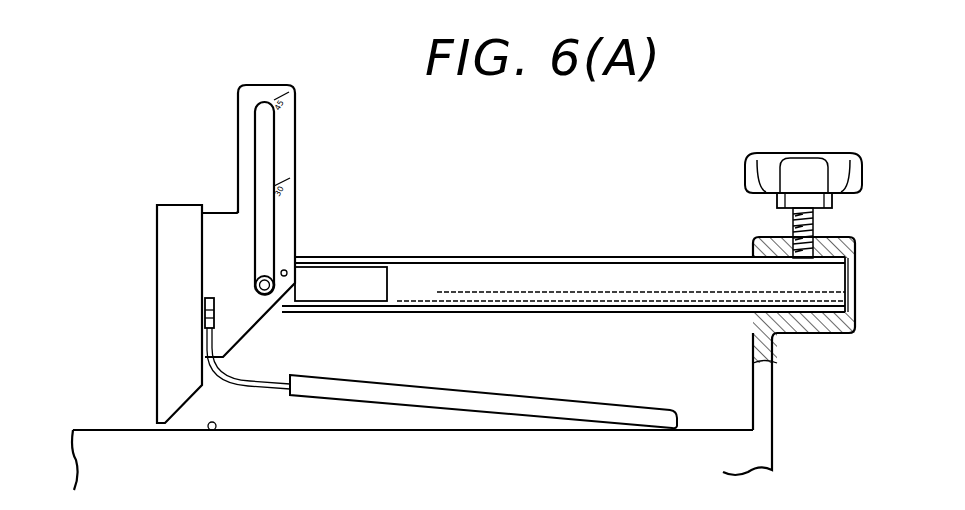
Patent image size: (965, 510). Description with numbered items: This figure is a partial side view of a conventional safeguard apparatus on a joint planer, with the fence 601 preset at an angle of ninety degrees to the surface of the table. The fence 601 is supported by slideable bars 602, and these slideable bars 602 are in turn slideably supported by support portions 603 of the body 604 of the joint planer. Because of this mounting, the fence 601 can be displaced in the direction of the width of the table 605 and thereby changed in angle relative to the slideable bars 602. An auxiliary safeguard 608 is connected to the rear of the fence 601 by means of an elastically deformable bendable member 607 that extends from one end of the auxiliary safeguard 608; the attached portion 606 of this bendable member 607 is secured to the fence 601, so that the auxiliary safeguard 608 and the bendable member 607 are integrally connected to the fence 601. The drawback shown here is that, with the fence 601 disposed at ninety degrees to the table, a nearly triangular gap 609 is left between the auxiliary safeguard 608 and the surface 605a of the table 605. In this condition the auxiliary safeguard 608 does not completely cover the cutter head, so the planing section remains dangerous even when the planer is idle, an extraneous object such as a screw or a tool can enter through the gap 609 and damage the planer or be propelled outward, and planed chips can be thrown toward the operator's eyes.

The fence 601 is at (170, 240).
The slideable bars 602 is at (562, 257).
The support portions 603 is at (855, 247).
The body 604 is at (777, 442).
The table 605 is at (120, 430).
The surface of the table 605a is at (210, 430).
The attached portion 606 is at (203, 317).
The elastically deformable bendable member 607 is at (267, 385).
The auxiliary safeguard 608 is at (448, 398).
The gap 609 is at (298, 413).